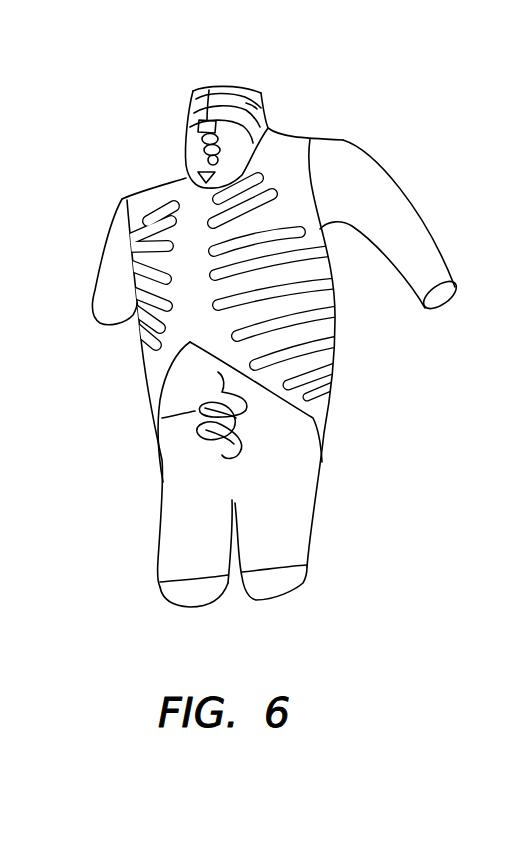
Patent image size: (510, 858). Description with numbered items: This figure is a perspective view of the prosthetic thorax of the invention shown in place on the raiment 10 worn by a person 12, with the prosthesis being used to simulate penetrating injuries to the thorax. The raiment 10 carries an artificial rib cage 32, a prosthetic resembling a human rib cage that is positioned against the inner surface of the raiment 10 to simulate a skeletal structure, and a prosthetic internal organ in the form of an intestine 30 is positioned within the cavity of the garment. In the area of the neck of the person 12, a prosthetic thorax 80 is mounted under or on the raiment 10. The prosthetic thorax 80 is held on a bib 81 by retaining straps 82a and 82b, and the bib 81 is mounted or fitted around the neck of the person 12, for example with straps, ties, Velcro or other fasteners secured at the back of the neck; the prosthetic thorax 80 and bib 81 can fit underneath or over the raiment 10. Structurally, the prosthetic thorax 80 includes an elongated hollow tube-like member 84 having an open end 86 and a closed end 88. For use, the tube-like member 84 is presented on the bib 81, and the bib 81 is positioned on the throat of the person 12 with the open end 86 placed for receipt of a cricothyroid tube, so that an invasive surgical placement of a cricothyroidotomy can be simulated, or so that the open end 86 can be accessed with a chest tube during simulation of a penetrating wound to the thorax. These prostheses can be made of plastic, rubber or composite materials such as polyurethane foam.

The raiment 10 is at (303, 141).
The person 12 is at (375, 183).
The intestine 30 is at (158, 418).
The artificial rib cage 32 is at (140, 332).
The prosthetic thorax 80 is at (267, 117).
The bib 81 is at (261, 106).
The retaining strap 82a is at (188, 183).
The retaining strap 82b is at (181, 190).
The elongated hollow tube-like member 84 is at (175, 133).
The open end 86 is at (207, 92).
The closed end 88 is at (203, 188).